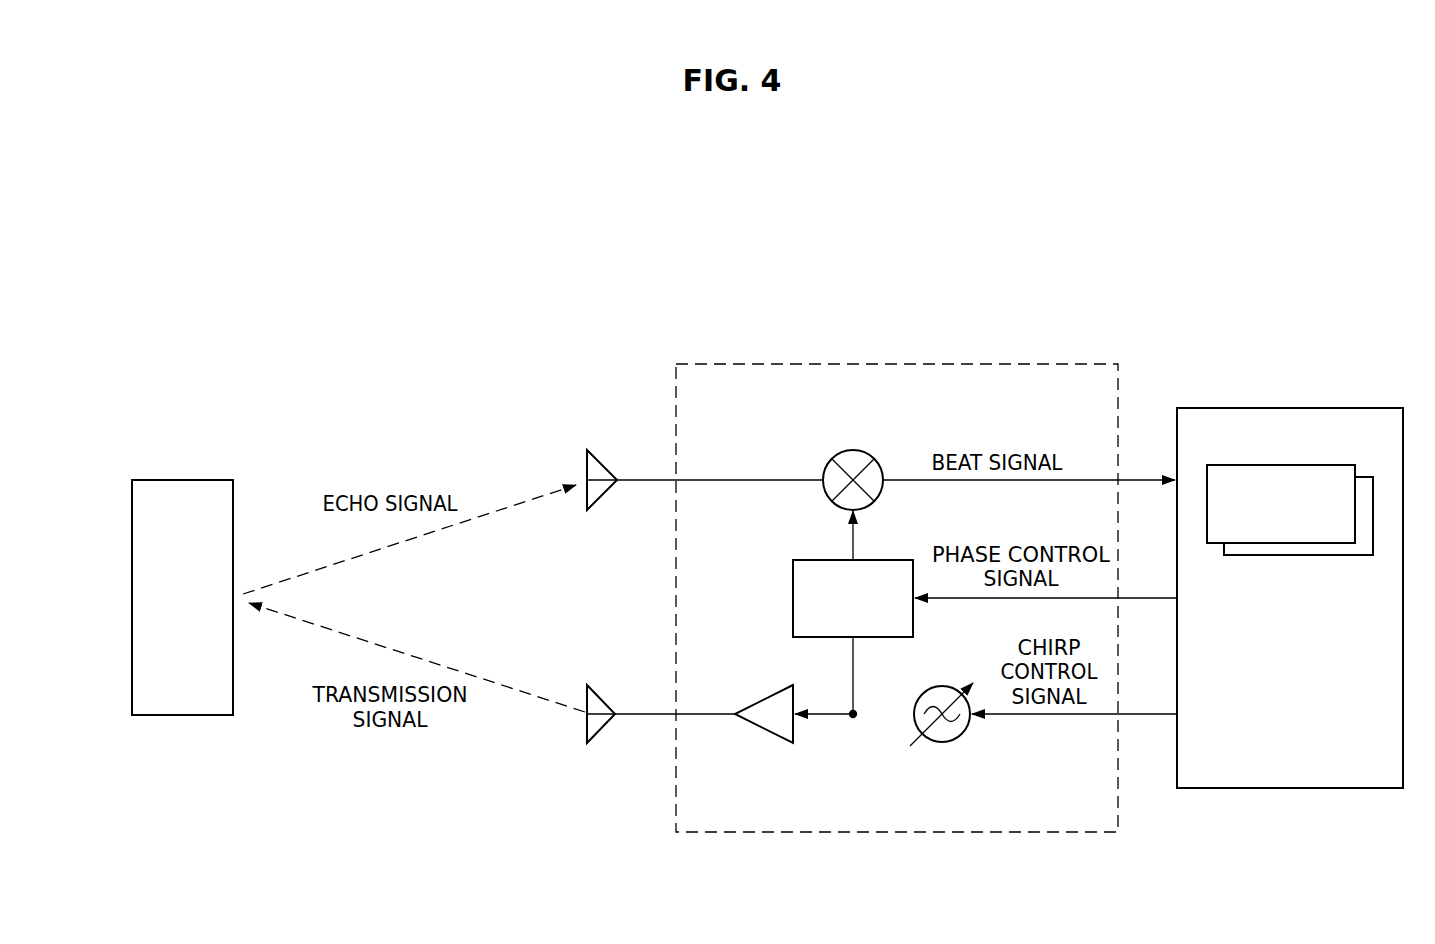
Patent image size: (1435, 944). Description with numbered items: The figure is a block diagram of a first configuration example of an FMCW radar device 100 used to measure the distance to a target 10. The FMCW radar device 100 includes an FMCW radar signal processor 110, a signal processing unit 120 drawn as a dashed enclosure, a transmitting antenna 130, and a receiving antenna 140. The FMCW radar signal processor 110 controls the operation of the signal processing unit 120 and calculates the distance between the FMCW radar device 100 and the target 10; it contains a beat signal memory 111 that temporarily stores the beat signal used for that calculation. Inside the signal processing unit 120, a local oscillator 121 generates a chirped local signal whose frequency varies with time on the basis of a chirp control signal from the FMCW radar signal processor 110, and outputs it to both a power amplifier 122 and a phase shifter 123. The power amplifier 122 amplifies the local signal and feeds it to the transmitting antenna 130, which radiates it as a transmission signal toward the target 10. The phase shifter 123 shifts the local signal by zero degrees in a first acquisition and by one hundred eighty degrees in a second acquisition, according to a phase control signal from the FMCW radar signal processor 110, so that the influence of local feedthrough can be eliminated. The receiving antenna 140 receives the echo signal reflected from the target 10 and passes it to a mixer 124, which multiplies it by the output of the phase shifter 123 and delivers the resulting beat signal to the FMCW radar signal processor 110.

The target 10 is at (203, 478).
The FMCW radar device 100 is at (1146, 280).
The FMCW radar signal processor 110 is at (1338, 406).
The beat signal memory 111 is at (1298, 462).
The signal processing unit 120 is at (1000, 363).
The local oscillator 121 is at (943, 742).
The power amplifier 122 is at (775, 737).
The phase shifter 123 is at (885, 556).
The mixer 124 is at (851, 450).
The transmitting antenna 130 is at (600, 727).
The receiving antenna 140 is at (608, 462).